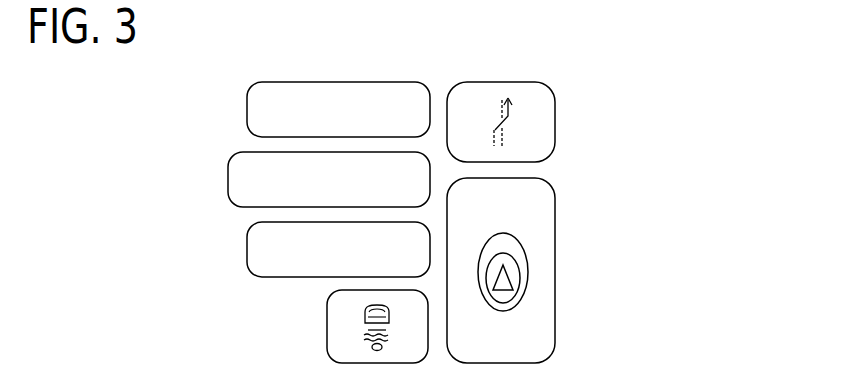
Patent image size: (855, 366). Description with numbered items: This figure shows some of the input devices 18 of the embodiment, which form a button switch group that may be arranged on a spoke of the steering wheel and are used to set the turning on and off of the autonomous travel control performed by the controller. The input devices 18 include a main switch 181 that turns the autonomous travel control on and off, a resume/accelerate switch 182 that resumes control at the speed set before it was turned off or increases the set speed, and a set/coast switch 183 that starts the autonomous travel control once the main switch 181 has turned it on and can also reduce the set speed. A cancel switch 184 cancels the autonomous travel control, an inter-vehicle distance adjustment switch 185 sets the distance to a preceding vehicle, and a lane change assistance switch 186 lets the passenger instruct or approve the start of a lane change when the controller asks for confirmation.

The input devices 18 is at (704, 112).
The main switch 181 is at (555, 190).
The resume/accelerate switch 182 is at (247, 96).
The set/coast switch 183 is at (247, 234).
The cancel switch 184 is at (228, 163).
The inter-vehicle distance adjustment switch 185 is at (327, 298).
The lane change assistance switch 186 is at (555, 93).